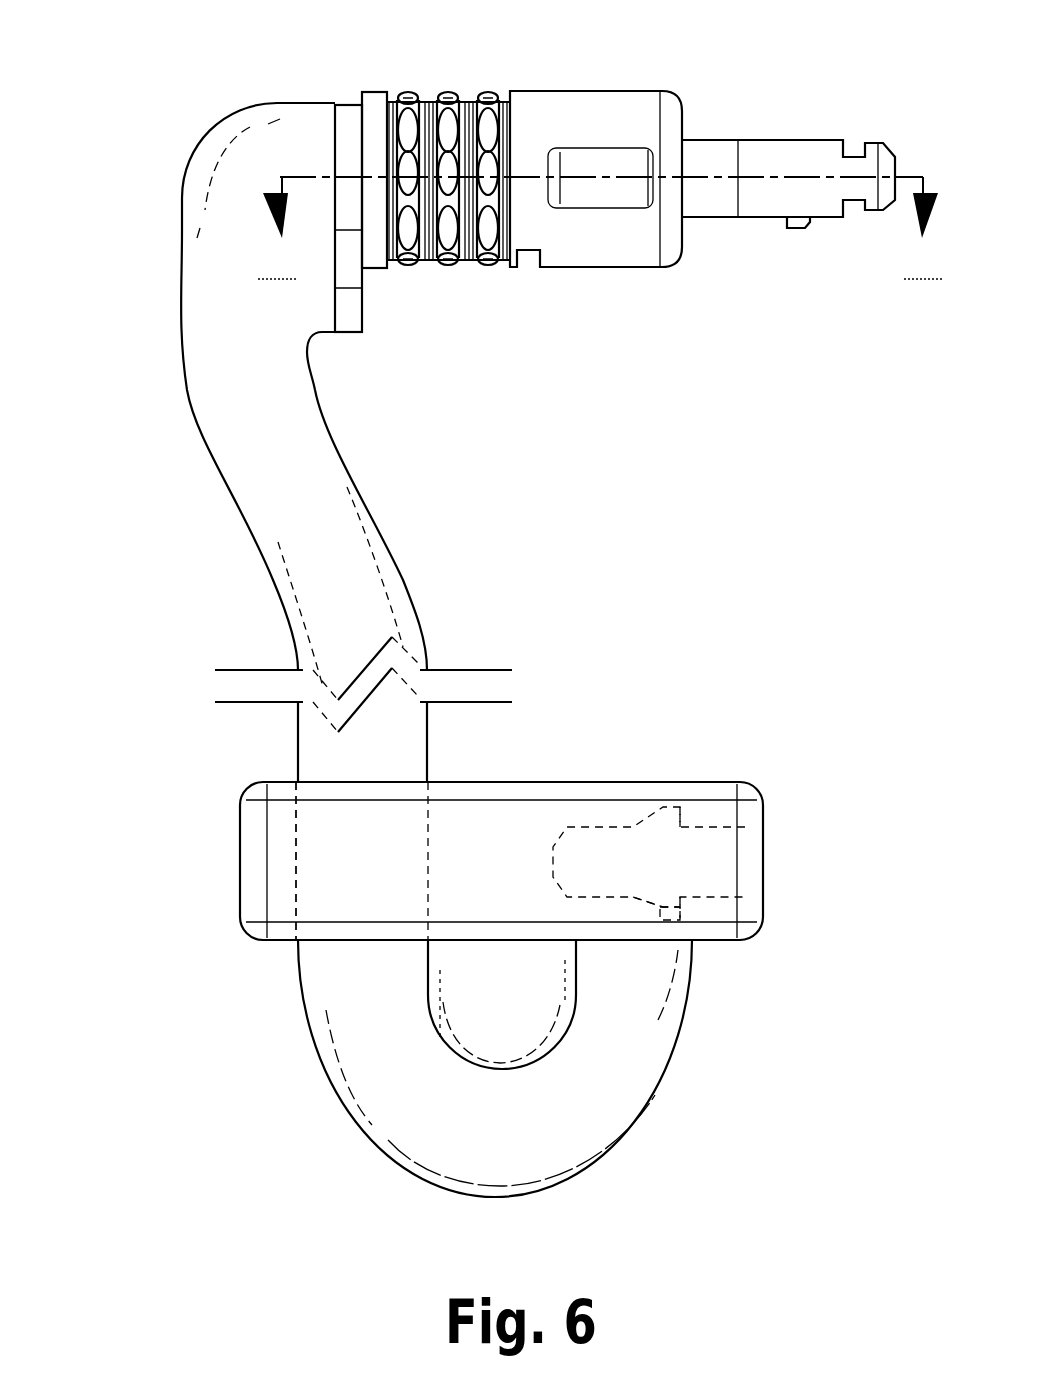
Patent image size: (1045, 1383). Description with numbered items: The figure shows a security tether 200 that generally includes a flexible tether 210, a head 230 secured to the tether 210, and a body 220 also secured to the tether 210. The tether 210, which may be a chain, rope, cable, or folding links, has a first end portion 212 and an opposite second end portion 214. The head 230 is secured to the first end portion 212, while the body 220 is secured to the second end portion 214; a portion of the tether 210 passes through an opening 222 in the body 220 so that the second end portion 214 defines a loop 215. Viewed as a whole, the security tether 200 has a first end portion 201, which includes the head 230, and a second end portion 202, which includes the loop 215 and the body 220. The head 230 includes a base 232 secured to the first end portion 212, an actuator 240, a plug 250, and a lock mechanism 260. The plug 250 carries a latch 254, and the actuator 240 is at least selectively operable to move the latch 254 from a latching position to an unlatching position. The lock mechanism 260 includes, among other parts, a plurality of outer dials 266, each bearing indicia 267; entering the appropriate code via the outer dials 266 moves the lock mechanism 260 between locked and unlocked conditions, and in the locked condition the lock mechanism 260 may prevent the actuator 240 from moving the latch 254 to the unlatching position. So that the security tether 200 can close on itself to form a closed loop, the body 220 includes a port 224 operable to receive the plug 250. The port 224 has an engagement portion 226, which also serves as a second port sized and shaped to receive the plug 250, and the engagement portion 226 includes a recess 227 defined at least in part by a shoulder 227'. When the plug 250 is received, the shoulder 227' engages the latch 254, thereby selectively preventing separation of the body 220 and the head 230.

The security tether 200 is at (139, 42).
The first end portion 201 is at (135, 146).
The second end portion 202 is at (190, 951).
The tether 210 is at (90, 488).
The first end portion 212 is at (136, 230).
The second end portion 214 is at (233, 1067).
The loop 215 is at (278, 1161).
The body 220 is at (160, 803).
The opening 222 is at (430, 817).
The port 224 is at (700, 806).
The engagement portion 226 is at (620, 802).
The recess 227 is at (719, 952).
The shoulder 227' is at (580, 954).
The head 230 is at (329, 57).
The base 232 is at (400, 295).
The actuator 240 is at (609, 109).
The plug 250 is at (831, 99).
The latch 254 is at (796, 254).
The lock mechanism 260 is at (471, 47).
The outer dials 266 is at (448, 92).
The indicia 267 is at (447, 242).